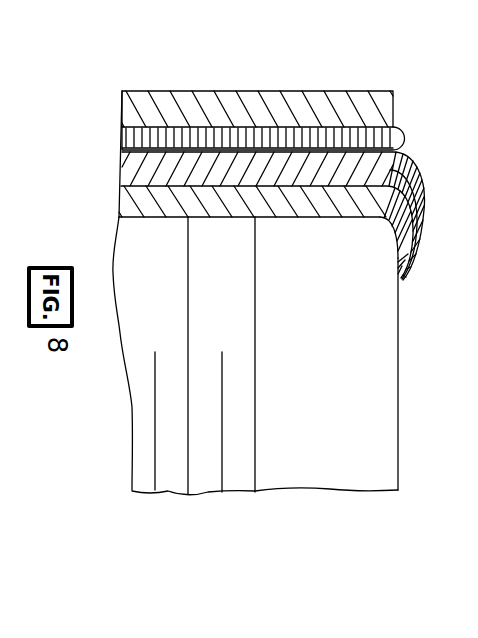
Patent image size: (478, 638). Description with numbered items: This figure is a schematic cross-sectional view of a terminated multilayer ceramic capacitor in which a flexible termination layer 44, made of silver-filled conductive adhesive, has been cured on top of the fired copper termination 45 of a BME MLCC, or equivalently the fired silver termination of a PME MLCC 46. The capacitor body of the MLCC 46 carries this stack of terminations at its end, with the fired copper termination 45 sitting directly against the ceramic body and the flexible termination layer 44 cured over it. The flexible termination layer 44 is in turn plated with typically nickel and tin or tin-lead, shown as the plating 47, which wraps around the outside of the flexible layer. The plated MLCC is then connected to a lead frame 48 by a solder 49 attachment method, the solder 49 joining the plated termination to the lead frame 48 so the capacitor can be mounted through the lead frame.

The flexible termination layer 44 is at (413, 183).
The fired copper termination 45 is at (118, 198).
The MLCC 46 is at (133, 413).
The plating 47 is at (416, 168).
The lead frame 48 is at (312, 91).
The solder 49 is at (122, 137).